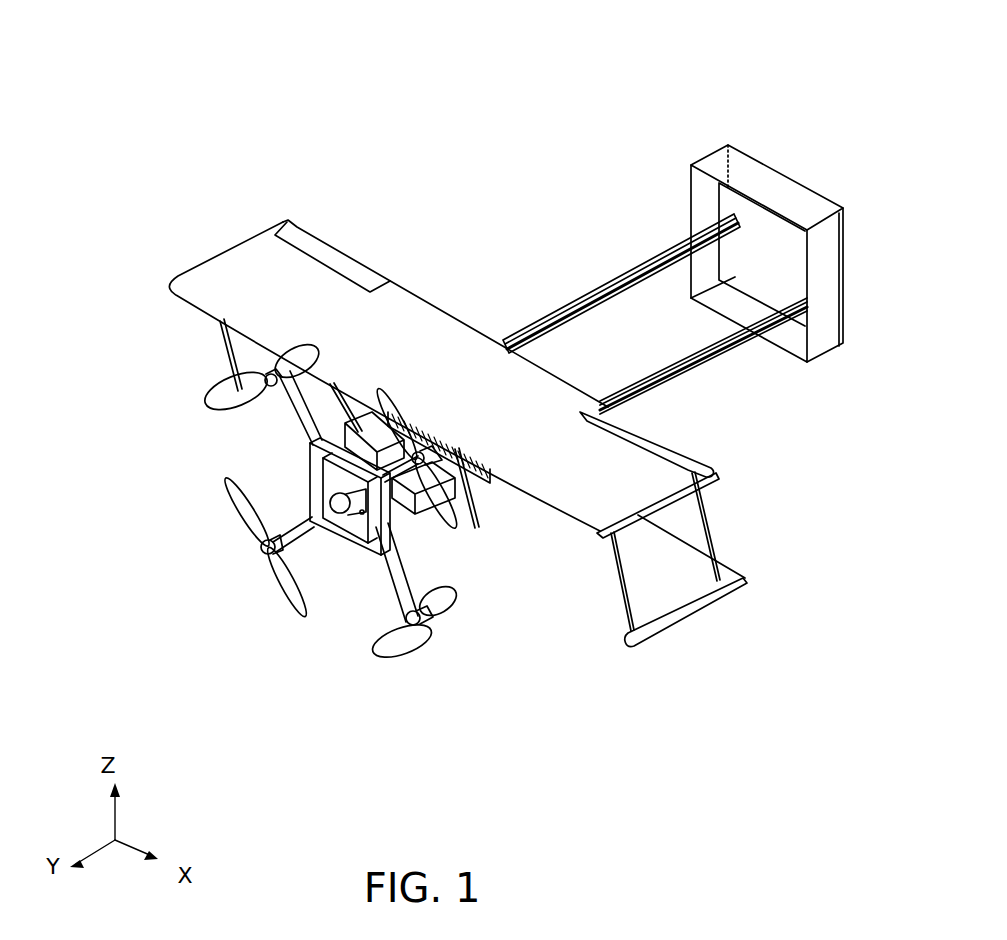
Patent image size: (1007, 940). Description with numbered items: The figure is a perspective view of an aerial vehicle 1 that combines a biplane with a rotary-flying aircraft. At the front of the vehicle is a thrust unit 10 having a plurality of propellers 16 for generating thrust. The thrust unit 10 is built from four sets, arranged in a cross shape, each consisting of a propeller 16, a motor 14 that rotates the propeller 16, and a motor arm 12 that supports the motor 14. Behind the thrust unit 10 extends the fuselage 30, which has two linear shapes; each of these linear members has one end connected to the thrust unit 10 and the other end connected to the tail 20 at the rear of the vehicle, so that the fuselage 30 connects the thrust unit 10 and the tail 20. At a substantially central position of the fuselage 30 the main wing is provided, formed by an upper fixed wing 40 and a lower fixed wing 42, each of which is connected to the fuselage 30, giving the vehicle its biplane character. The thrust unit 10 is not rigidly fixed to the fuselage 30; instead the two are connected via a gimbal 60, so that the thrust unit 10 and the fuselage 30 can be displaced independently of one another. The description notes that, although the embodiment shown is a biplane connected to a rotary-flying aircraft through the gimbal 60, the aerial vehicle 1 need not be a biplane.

The aerial vehicle 1 is at (335, 127).
The thrust unit 10 is at (302, 539).
The motor arm 12 is at (300, 403).
The motor 14 is at (266, 374).
The propeller 16 is at (300, 409).
The tail 20 is at (728, 170).
The fuselage 30 is at (632, 272).
The upper fixed wing 40 is at (585, 507).
The lower fixed wing 42 is at (627, 630).
The gimbal 60 is at (333, 500).